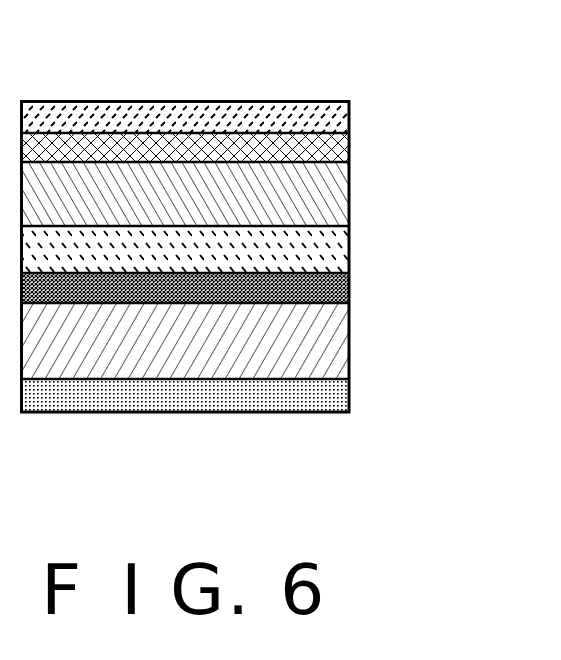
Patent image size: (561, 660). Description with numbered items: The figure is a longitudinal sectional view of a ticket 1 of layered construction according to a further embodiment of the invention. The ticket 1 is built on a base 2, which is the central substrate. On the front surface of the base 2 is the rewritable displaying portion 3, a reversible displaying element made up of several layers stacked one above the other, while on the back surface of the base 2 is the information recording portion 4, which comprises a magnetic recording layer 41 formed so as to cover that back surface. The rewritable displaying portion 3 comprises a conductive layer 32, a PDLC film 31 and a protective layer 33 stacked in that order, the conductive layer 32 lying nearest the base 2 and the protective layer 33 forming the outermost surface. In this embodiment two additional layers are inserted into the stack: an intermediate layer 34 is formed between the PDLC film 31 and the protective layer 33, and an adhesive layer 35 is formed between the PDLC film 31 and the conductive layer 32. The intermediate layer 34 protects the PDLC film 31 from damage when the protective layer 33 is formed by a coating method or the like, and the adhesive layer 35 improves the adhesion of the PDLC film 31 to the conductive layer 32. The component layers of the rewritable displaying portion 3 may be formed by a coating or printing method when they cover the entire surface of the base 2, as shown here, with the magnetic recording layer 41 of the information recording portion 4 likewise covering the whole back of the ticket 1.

The ticket 1 is at (271, 97).
The base 2 is at (345, 340).
The rewritable displaying portion 3 is at (449, 97).
The information recording portion 4 is at (22, 427).
The PDLC film 31 is at (345, 190).
The conductive layer 32 is at (349, 285).
The protective layer 33 is at (347, 113).
The intermediate layer 34 is at (347, 145).
The adhesive layer 35 is at (345, 238).
The magnetic recording layer 41 is at (345, 393).